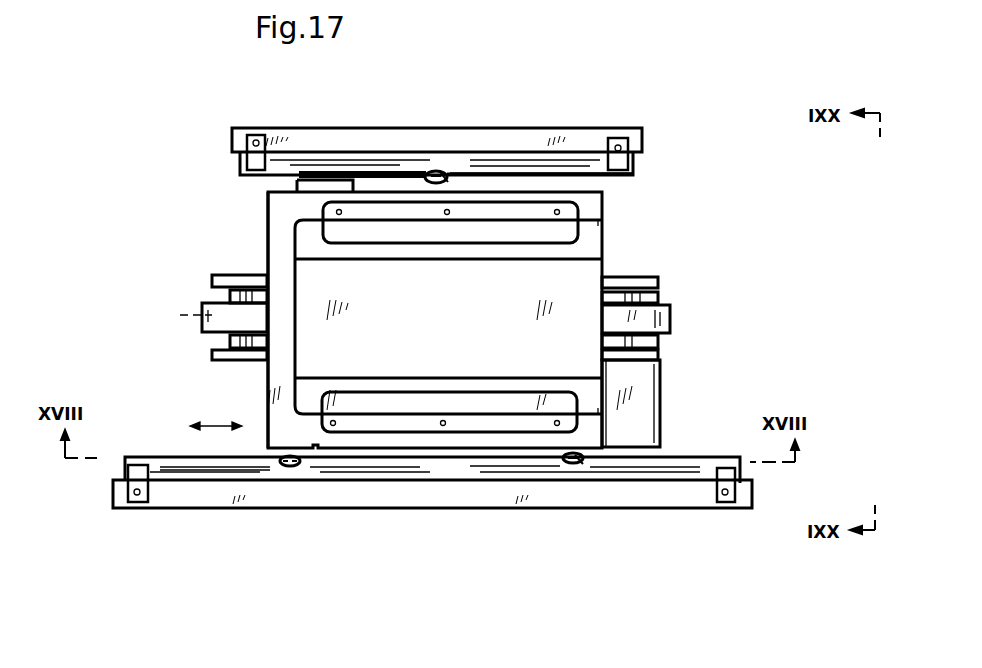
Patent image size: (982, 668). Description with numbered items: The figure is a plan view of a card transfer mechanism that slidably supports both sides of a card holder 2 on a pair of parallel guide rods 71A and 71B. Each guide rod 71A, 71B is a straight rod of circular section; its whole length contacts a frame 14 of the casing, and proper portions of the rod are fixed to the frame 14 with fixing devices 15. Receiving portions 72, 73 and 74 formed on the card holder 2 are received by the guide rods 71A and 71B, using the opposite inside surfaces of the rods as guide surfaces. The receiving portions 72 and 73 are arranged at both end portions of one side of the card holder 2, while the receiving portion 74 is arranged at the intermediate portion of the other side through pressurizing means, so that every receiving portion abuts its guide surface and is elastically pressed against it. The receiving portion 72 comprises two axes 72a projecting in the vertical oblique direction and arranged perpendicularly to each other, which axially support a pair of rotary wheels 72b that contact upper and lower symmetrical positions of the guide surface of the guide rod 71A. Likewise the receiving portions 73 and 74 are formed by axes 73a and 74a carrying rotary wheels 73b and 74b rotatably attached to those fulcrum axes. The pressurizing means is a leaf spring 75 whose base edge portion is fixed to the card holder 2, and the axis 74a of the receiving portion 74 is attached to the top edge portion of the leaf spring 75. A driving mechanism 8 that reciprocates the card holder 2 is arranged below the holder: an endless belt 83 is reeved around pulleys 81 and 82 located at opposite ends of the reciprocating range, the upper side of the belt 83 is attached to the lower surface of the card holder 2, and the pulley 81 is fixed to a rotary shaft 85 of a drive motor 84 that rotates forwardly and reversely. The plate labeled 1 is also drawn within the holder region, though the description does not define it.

The table 1 is at (595, 269).
The card holder 2 is at (597, 208).
The driving mechanism 8 is at (663, 326).
The frame 14 is at (330, 133).
The fixing devices 15 is at (257, 140).
The guide rod 71A is at (477, 473).
The guide rod 71B is at (578, 165).
The receiving portion 72 is at (300, 468).
The axes 72a is at (292, 466).
The rotary wheels 72b is at (285, 465).
The receiving portion 73 is at (557, 470).
The axes 73a is at (583, 473).
The rotary wheels 73b is at (573, 467).
The receiving portion 74 is at (448, 176).
The axis 74a is at (445, 178).
The rotary wheels 74b is at (432, 174).
The leaf spring 75 is at (385, 172).
The pulley 81 is at (672, 312).
The pulley 82 is at (180, 315).
The endless belt 83 is at (655, 306).
The drive motor 84 is at (661, 420).
The rotary shaft 85 is at (637, 342).